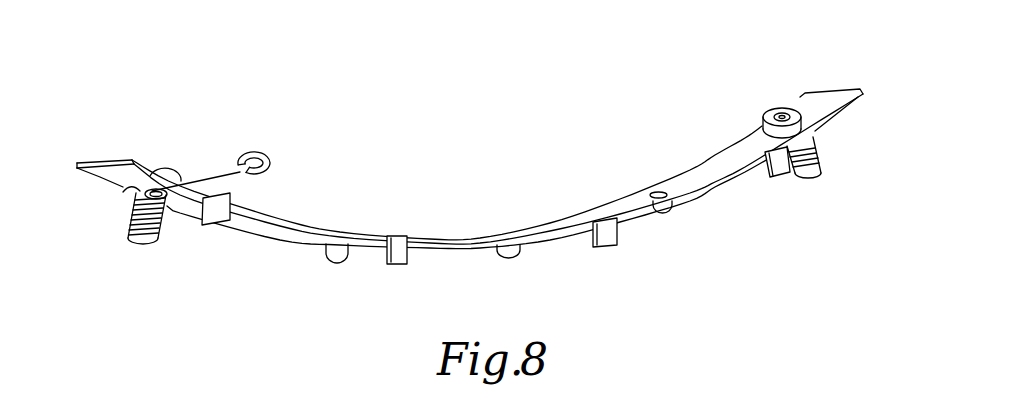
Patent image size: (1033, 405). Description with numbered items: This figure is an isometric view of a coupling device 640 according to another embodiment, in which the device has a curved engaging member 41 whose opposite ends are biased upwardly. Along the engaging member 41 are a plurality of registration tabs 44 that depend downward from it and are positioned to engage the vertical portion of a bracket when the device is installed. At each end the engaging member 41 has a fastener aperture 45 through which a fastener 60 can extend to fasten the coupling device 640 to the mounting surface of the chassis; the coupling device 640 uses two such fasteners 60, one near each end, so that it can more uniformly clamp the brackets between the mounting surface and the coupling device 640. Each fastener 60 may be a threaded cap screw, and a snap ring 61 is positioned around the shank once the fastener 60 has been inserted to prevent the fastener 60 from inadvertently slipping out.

The engaging member 41 is at (93, 162).
The registration tabs 44 is at (782, 178).
The fastener aperture 45 is at (136, 196).
The fastener 60 is at (172, 163).
The snap ring 61 is at (254, 152).
The coupling device 640 is at (591, 157).